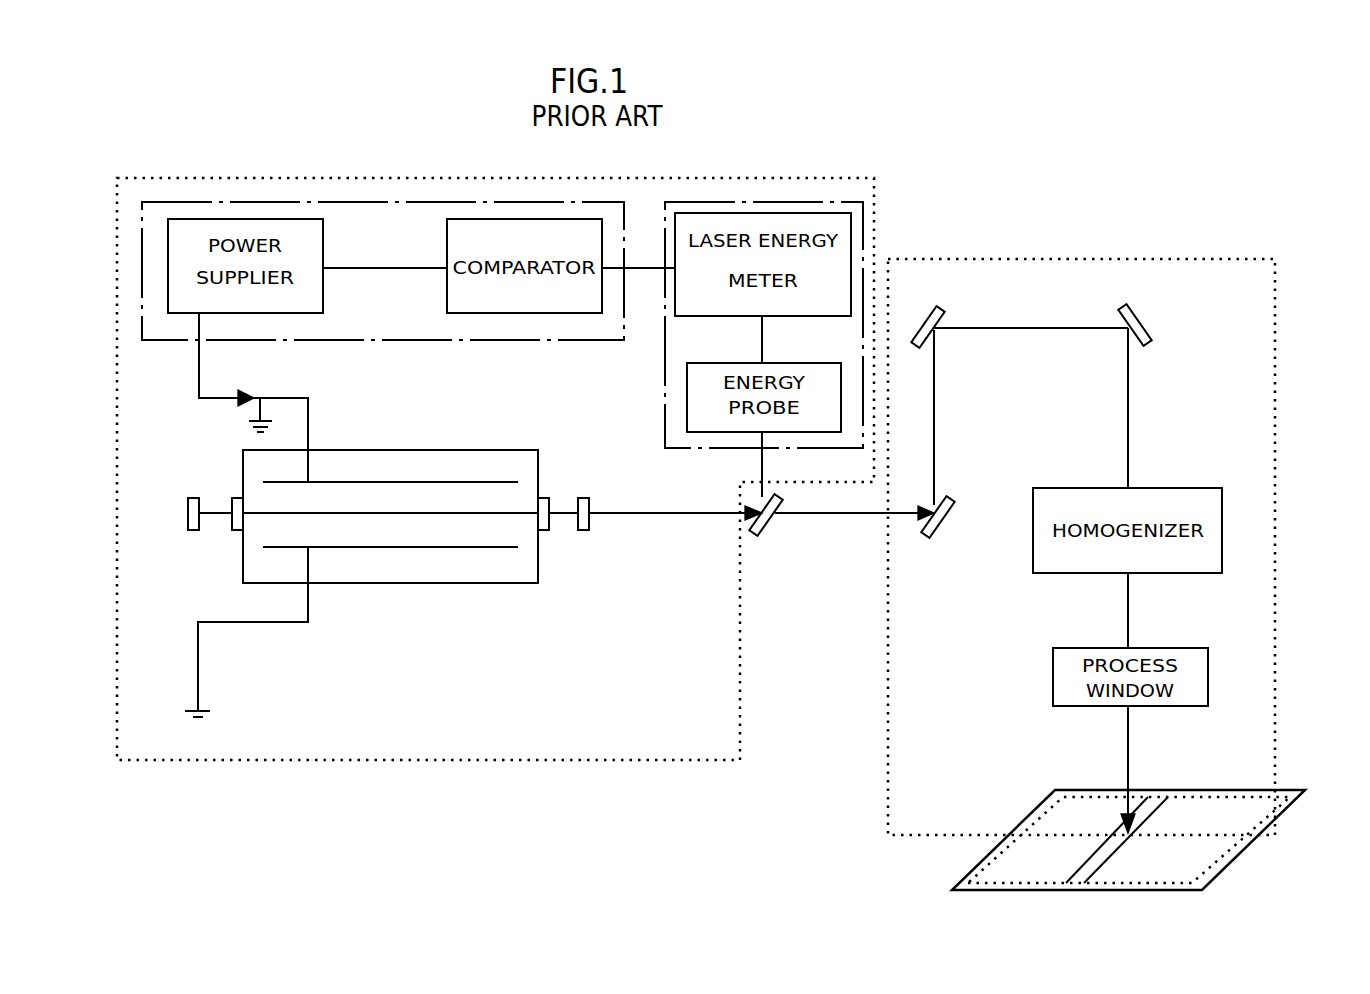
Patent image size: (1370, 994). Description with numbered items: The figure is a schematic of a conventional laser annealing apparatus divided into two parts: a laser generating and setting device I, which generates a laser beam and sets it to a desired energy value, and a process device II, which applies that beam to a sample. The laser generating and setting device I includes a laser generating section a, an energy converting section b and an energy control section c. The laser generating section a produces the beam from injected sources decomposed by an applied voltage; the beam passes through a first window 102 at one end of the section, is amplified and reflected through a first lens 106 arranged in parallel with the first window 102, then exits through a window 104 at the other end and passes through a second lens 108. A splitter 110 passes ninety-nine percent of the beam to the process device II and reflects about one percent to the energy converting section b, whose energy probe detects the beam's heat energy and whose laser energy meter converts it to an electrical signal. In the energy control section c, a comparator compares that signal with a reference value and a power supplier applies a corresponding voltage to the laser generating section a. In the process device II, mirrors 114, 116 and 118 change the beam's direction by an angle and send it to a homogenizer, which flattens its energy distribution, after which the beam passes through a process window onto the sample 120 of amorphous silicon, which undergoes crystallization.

The first window 102 is at (233, 500).
The window 104 is at (547, 498).
The first lens 106 is at (188, 515).
The second lens 108 is at (590, 498).
The splitter 110 is at (773, 525).
The mirror 114 is at (944, 522).
The mirror 116 is at (940, 297).
The mirror 118 is at (1143, 310).
The sample 120 is at (1243, 843).
The laser generating section a is at (440, 583).
The energy converting section b is at (865, 222).
The energy control section c is at (402, 340).
The laser generating and setting device I is at (470, 760).
The process device II is at (1275, 437).